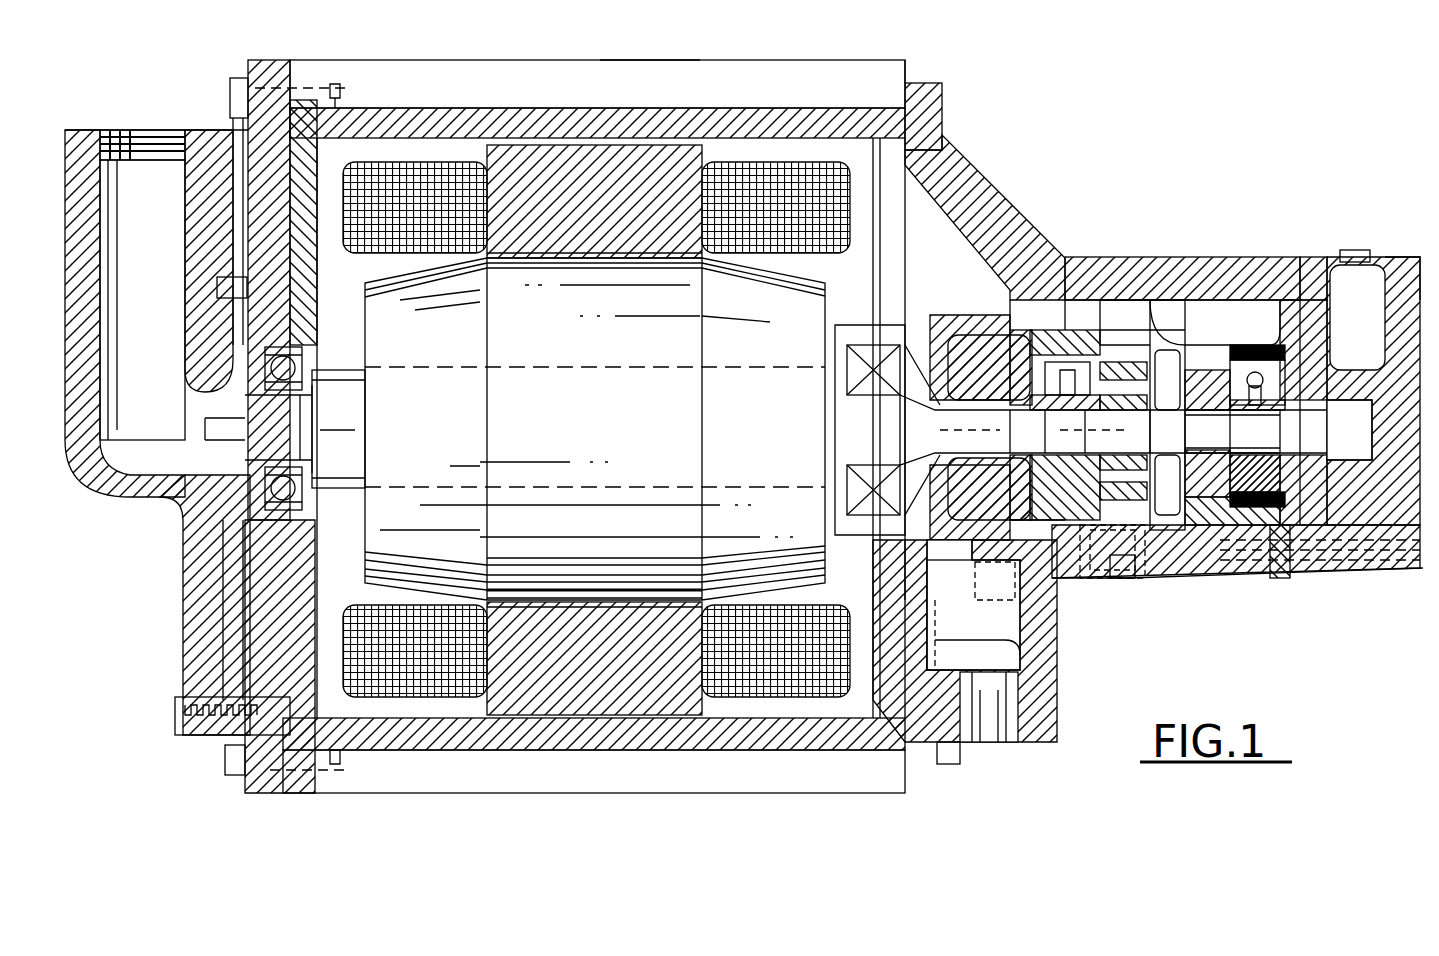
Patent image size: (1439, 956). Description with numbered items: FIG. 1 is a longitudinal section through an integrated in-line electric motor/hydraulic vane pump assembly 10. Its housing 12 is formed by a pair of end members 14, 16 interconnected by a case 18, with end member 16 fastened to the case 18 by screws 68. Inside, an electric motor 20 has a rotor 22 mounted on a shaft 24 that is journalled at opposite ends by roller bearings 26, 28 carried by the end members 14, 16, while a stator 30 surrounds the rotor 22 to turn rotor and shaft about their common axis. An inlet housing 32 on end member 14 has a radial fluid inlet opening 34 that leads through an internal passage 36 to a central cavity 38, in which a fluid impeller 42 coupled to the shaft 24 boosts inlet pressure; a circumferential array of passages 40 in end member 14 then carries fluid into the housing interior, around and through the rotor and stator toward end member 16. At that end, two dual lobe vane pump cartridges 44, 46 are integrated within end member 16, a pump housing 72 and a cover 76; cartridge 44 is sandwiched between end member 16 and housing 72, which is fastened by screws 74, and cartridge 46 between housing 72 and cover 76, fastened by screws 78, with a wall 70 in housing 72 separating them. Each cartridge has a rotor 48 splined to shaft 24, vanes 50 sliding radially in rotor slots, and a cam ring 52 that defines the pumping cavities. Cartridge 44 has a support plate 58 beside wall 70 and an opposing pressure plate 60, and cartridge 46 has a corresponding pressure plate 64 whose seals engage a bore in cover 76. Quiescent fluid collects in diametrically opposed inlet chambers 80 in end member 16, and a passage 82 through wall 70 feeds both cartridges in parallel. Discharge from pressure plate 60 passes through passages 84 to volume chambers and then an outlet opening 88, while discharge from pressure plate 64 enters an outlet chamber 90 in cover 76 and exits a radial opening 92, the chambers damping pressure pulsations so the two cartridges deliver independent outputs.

The integrated in-line electric motor/hydraulic vane pump assembly 10 is at (1043, 27).
The housing 12 is at (671, 21).
The end member 14 is at (285, 64).
The end member 16 is at (946, 84).
The case 18 is at (775, 108).
The electric motor 20 is at (540, 145).
The rotor 22 is at (642, 410).
The shaft 24 is at (357, 447).
The roller bearing 26 is at (290, 352).
The roller bearing 28 is at (855, 365).
The stator 30 is at (632, 150).
The inlet housing 32 is at (185, 497).
The fluid inlet opening 34 is at (140, 135).
The internal passage 36 is at (172, 336).
The central cavity 38 is at (210, 455).
The passages 40 is at (265, 210).
The fluid impeller 42 is at (235, 520).
The vane pump cartridge 44 is at (1145, 305).
The vane pump cartridge 46 is at (1272, 312).
The rotor 48 is at (1088, 600).
The vanes 50 is at (1292, 322).
The cam ring 52 is at (1097, 318).
The support plate 58 is at (1210, 305).
The pressure plate 60 is at (1012, 330).
The pressure plate 64 is at (1335, 578).
The screws 68 is at (945, 765).
The wall 70 is at (1165, 530).
The housing 72 is at (1253, 323).
The screws 74 is at (1145, 580).
The cover 76 is at (1395, 318).
The screws 78 is at (1422, 570).
The inlet chamber 80 is at (940, 235).
The passage 82 is at (1165, 315).
The passages 84 is at (965, 345).
The outlet opening 88 is at (1012, 745).
The outlet chamber 90 is at (1396, 258).
The radial opening 92 is at (1368, 257).